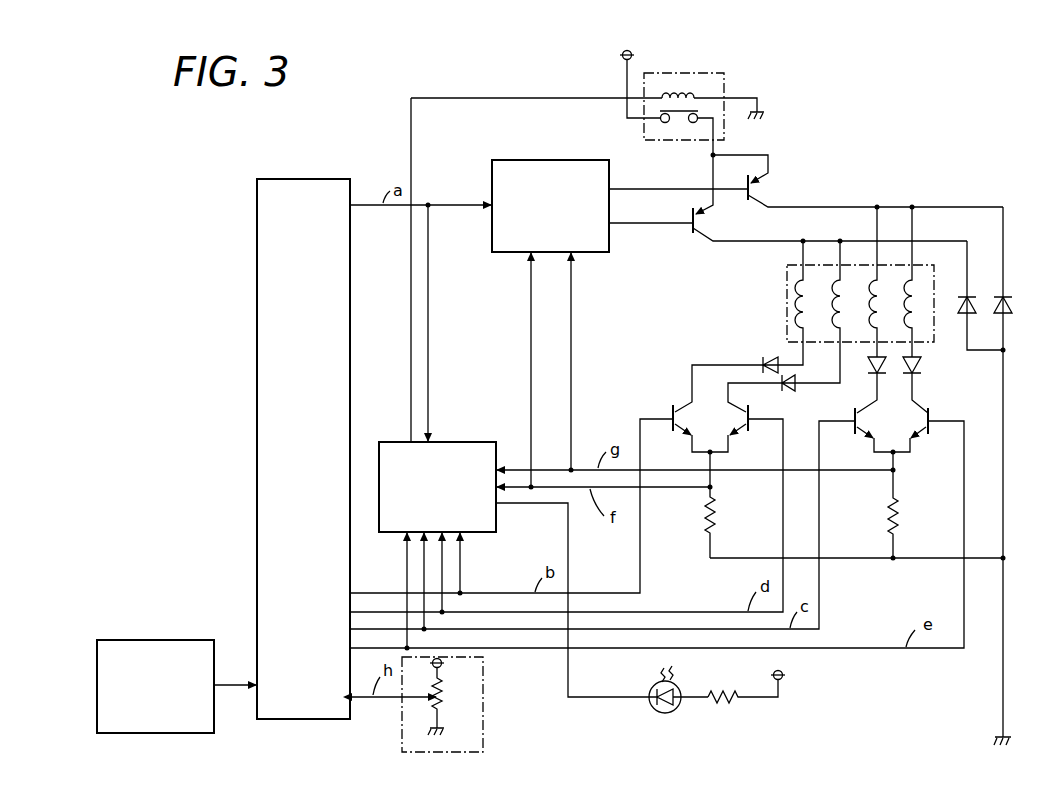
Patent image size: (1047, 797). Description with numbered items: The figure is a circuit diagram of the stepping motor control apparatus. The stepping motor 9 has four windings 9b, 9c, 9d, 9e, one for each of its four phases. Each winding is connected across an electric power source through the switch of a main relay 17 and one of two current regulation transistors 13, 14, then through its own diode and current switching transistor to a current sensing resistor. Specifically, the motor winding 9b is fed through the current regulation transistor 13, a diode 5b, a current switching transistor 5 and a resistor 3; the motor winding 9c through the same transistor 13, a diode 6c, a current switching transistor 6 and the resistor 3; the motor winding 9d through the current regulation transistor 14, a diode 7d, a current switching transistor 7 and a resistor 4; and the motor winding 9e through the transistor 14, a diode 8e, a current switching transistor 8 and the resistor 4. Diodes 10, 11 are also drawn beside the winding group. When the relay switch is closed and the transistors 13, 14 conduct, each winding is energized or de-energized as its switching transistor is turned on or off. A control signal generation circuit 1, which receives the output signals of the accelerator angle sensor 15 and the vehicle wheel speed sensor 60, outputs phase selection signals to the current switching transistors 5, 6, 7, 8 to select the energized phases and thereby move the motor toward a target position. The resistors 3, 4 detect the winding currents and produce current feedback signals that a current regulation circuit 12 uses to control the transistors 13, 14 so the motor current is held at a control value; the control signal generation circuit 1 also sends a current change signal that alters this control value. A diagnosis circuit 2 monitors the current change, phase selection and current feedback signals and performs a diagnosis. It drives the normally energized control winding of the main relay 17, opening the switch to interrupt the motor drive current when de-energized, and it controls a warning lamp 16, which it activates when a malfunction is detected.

The control signal generation circuit 1 is at (338, 178).
The diagnosis circuit 2 is at (478, 441).
The resistor 3 is at (716, 518).
The resistor 4 is at (899, 520).
The current switching transistor 5 is at (681, 446).
The current switching transistor 6 is at (747, 437).
The current switching transistor 7 is at (860, 446).
The current switching transistor 8 is at (928, 438).
The stepping motor 9 is at (843, 295).
The motor winding 9b is at (808, 280).
The motor winding 9c is at (845, 280).
The motor winding 9d is at (882, 280).
The motor winding 9e is at (917, 280).
The diode 10 is at (972, 296).
The diode 11 is at (1008, 300).
The current regulation circuit 12 is at (590, 160).
The current regulation transistor 13 is at (706, 228).
The current regulation transistor 14 is at (762, 188).
The accelerator angle sensor 15 is at (483, 706).
The warning lamp 16 is at (657, 716).
The main relay 17 is at (703, 73).
The diode 5b is at (775, 358).
The diode 6c is at (797, 388).
The diode 7d is at (866, 367).
The diode 8e is at (922, 368).
The vehicle wheel speed sensor 60 is at (193, 640).